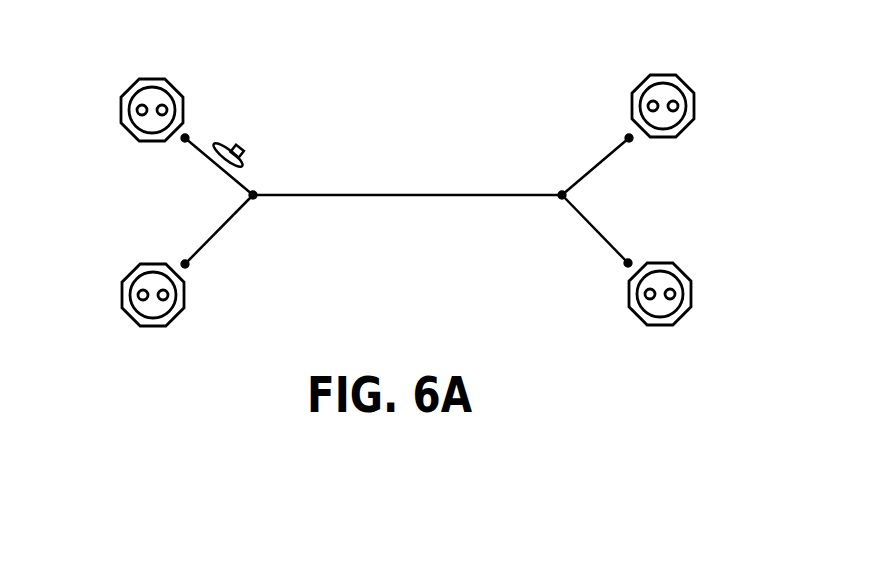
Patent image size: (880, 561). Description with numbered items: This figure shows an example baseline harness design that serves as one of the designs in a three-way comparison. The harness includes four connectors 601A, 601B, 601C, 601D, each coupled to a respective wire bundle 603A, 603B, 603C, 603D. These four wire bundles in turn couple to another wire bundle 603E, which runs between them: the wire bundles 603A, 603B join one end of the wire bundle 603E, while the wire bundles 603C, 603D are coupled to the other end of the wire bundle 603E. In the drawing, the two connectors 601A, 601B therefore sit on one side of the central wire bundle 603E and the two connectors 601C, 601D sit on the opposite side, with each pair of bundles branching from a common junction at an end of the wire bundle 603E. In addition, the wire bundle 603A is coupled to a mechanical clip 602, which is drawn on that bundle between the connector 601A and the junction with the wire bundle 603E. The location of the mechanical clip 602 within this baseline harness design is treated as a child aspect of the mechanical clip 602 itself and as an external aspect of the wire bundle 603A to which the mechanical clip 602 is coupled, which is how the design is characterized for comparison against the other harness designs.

The connector 601A is at (240, 94).
The connector 601B is at (242, 298).
The connector 601C is at (632, 100).
The connector 601D is at (630, 292).
The mechanical clip 602 is at (242, 150).
The wire bundle 603A is at (192, 146).
The wire bundle 603B is at (197, 253).
The wire bundle 603C is at (629, 144).
The wire bundle 603D is at (662, 232).
The wire bundle 603E is at (479, 196).